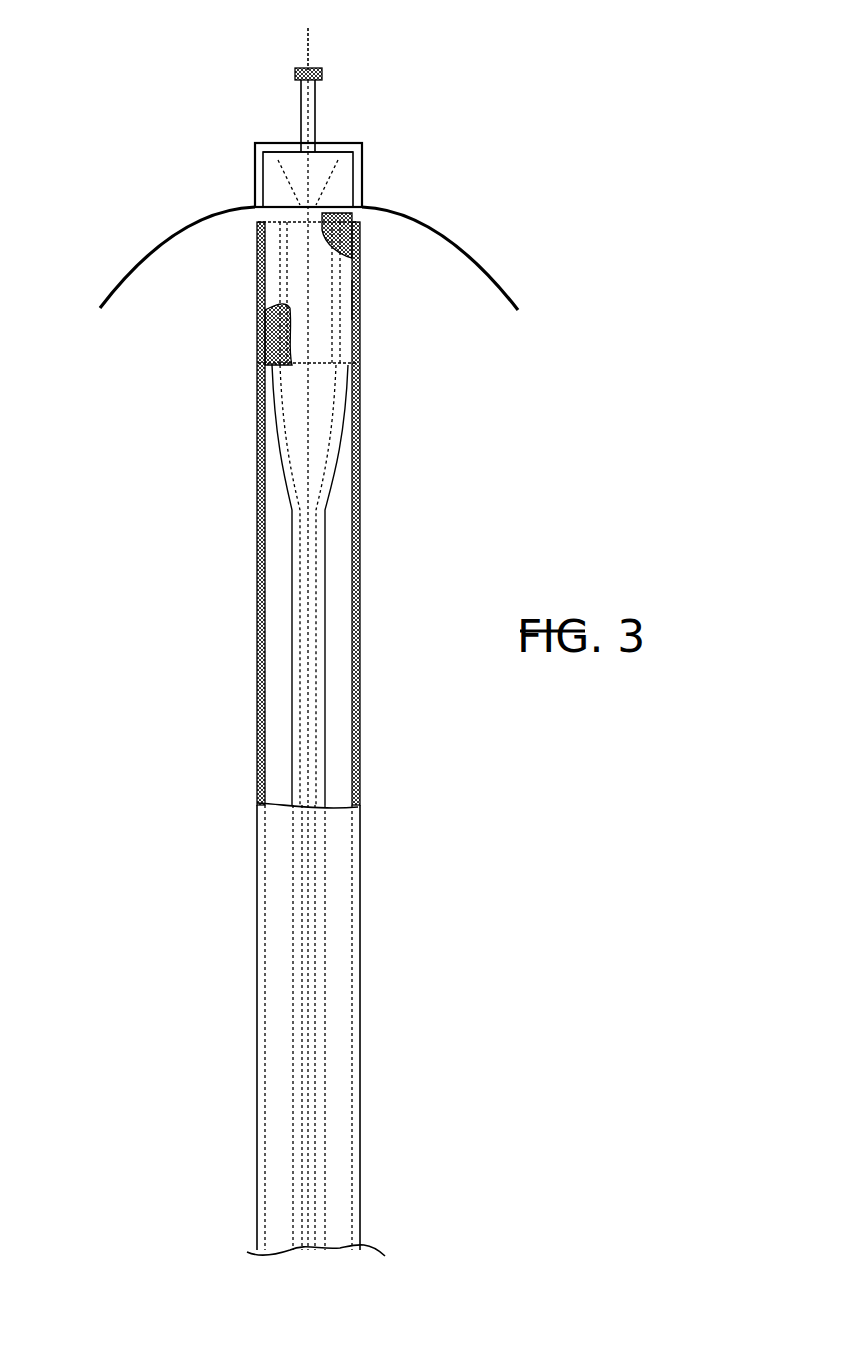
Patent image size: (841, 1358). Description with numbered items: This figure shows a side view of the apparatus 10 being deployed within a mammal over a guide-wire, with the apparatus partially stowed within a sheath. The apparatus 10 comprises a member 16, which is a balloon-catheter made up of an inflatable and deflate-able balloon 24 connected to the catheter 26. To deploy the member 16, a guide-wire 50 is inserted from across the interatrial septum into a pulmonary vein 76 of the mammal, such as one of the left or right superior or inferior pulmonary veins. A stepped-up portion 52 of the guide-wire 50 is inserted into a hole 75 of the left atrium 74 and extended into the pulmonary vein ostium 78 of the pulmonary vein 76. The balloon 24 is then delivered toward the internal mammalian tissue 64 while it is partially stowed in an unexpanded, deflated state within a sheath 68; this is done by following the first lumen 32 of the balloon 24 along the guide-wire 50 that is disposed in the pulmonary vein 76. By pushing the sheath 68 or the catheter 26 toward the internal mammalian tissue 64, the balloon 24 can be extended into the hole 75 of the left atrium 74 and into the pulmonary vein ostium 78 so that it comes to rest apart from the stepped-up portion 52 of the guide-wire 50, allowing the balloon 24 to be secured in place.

The apparatus 10 is at (398, 390).
The member 16 is at (348, 328).
The balloon 24 is at (272, 297).
The catheter 26 is at (322, 640).
The first lumen 32 is at (308, 262).
The guide-wire 50 is at (310, 55).
The stepped-up portion 52 is at (300, 72).
The internal mammalian tissue 64 is at (412, 212).
The sheath 68 is at (358, 302).
The left atrium 74 is at (148, 287).
The hole 75 is at (260, 212).
The pulmonary vein 76 is at (255, 165).
The pulmonary vein ostium 78 is at (362, 165).